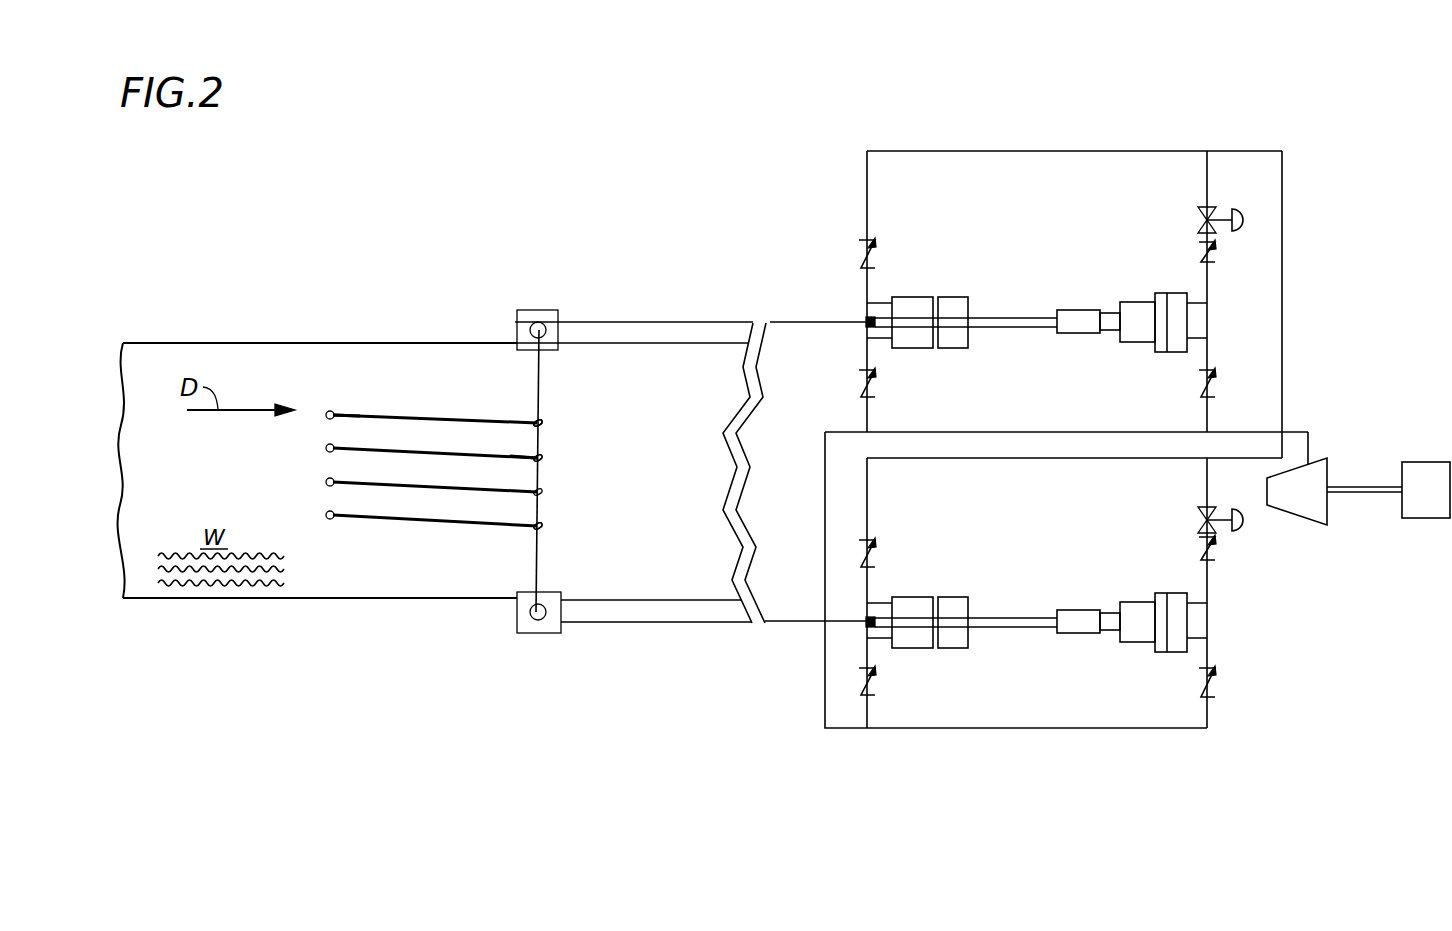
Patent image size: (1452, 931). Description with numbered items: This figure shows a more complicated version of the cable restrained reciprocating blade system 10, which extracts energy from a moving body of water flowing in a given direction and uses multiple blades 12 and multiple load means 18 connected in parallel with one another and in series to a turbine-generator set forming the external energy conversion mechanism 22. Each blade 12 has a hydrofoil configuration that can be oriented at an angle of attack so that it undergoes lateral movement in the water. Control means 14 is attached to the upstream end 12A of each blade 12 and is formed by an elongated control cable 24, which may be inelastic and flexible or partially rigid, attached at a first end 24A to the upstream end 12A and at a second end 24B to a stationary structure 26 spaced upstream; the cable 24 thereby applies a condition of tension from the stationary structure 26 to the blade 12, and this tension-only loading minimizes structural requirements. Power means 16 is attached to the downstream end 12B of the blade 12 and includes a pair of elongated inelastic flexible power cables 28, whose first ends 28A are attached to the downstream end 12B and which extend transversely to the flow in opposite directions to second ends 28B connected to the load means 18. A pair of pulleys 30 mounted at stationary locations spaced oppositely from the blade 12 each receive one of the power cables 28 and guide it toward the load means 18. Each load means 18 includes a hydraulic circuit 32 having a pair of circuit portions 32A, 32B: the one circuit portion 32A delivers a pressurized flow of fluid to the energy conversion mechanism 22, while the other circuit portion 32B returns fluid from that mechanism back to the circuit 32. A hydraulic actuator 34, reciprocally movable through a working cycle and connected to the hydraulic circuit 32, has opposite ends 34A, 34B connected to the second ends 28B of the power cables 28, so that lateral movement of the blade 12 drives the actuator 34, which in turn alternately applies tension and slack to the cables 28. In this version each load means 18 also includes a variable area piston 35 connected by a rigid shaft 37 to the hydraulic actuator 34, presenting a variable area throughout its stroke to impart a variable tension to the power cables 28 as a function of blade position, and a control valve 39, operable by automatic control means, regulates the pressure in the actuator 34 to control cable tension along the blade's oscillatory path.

The reciprocating blade system 10 is at (722, 206).
The blade 12 is at (545, 458).
The upstream end of blade 12A is at (533, 418).
The downstream end of blade 12B is at (545, 422).
The control means 14 is at (404, 408).
The power means 16 is at (673, 311).
The load means 18 is at (1282, 295).
The external energy conversion mechanism 22 is at (1360, 468).
The control cable 24 is at (443, 423).
The first end of control cable 24A is at (522, 458).
The second end of control cable 24B is at (340, 418).
The stationary structure 26 is at (326, 515).
The power cables 28 is at (612, 318).
The first ends of power cables 28A is at (543, 408).
The second ends of power cables 28B is at (855, 320).
The pulleys 30 is at (515, 321).
The hydraulic circuit 32 is at (1294, 372).
The circuit portion 32A is at (1207, 175).
The circuit portion 32B is at (867, 182).
The hydraulic actuator 34 is at (915, 350).
The end of hydraulic actuator 34A is at (862, 332).
The end of hydraulic actuator 34B is at (862, 632).
The variable area piston 35 is at (1082, 310).
The rigid shaft 37 is at (1015, 316).
The control valve 39 is at (1240, 228).